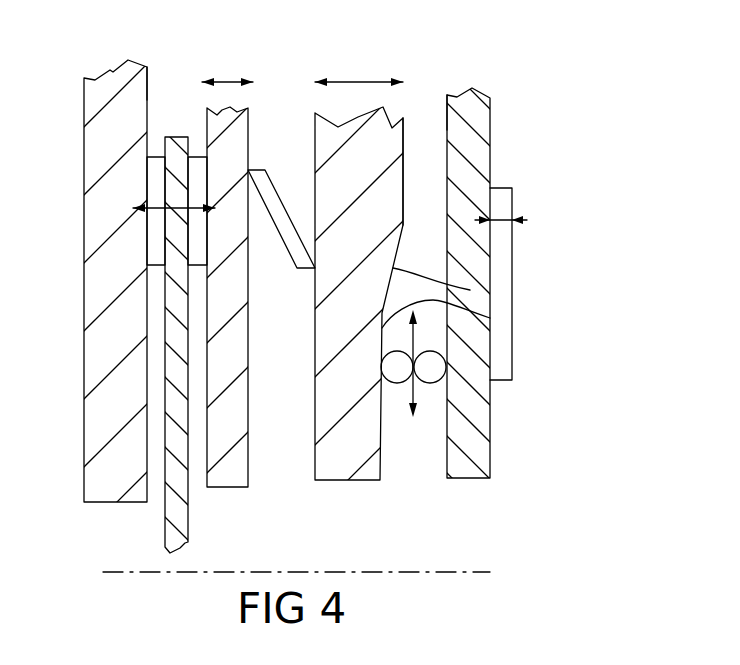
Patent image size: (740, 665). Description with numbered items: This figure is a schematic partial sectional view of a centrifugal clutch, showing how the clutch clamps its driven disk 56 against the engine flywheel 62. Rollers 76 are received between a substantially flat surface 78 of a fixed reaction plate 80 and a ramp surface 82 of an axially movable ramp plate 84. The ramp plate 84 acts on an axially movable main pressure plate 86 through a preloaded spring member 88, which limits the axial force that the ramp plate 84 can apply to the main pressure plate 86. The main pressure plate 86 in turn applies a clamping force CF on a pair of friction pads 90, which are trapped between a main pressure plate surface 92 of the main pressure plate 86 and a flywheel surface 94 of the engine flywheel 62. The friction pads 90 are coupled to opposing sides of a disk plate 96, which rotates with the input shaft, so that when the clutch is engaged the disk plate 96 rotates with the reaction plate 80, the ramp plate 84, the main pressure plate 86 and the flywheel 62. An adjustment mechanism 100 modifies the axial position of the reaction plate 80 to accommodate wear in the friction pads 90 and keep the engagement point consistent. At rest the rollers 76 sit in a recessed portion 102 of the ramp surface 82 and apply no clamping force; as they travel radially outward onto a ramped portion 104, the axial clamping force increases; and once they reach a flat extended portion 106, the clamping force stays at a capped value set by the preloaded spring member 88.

The driven disk 56 is at (196, 58).
The engine flywheel 62 is at (100, 178).
The rollers 76 is at (487, 452).
The substantially flat surface 78 is at (447, 113).
The fixed reaction plate 80 is at (485, 170).
The ramp surface 82 is at (380, 452).
The axially movable ramp plate 84 is at (371, 52).
The main pressure plate 86 is at (228, 477).
The preloaded spring member 88 is at (280, 200).
The friction members 90 is at (198, 178).
The main pressure plate surface 92 is at (207, 345).
The flywheel surface 94 is at (147, 85).
The disk plate 96 is at (170, 525).
The adjustment mechanism 100 is at (503, 270).
The recessed portion 102 is at (490, 318).
The ramped portion 104 is at (470, 290).
The flat extended portion 106 is at (403, 163).
The clamping force CF is at (205, 207).